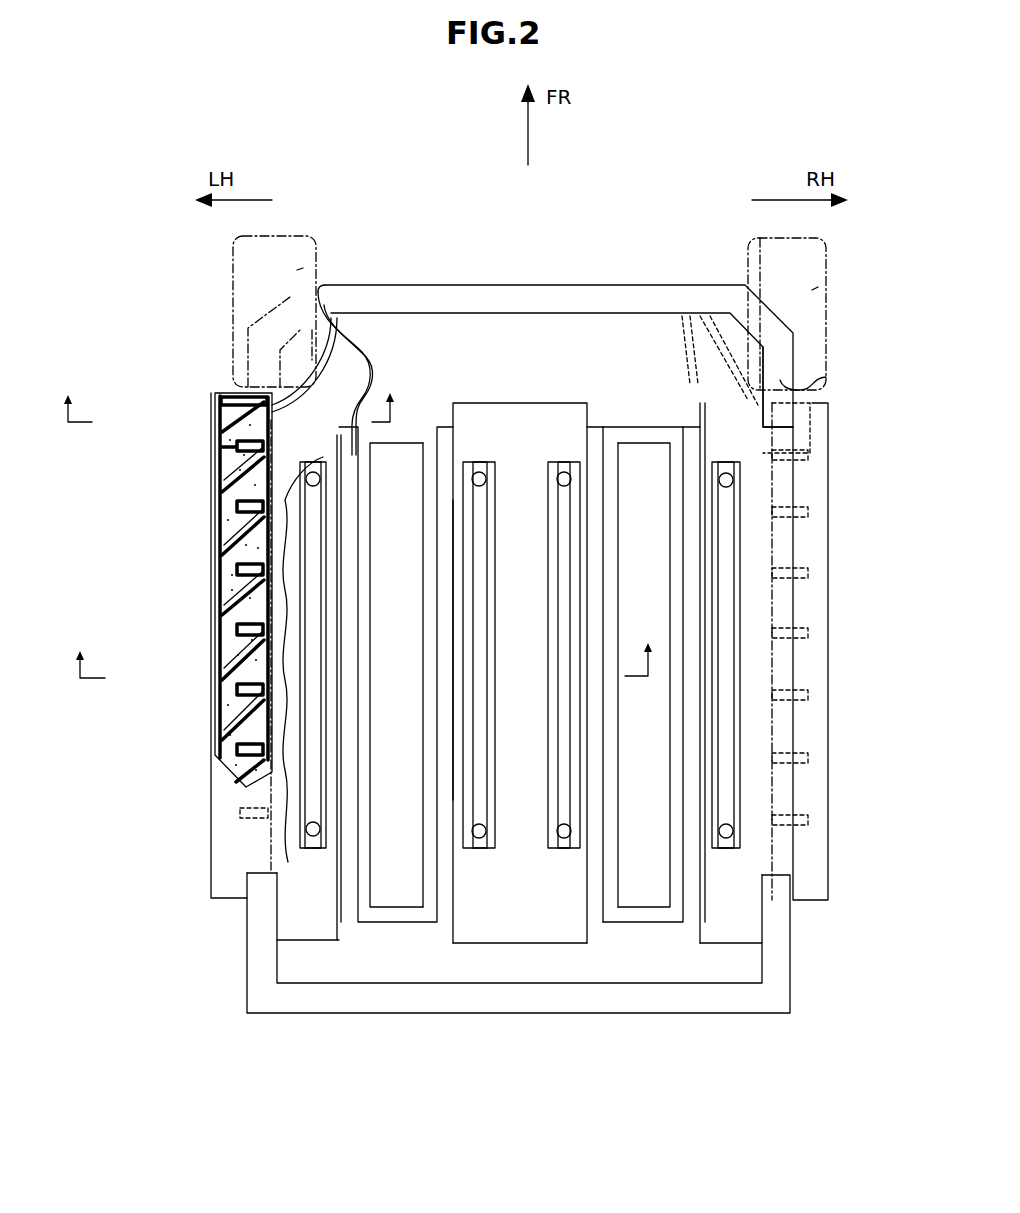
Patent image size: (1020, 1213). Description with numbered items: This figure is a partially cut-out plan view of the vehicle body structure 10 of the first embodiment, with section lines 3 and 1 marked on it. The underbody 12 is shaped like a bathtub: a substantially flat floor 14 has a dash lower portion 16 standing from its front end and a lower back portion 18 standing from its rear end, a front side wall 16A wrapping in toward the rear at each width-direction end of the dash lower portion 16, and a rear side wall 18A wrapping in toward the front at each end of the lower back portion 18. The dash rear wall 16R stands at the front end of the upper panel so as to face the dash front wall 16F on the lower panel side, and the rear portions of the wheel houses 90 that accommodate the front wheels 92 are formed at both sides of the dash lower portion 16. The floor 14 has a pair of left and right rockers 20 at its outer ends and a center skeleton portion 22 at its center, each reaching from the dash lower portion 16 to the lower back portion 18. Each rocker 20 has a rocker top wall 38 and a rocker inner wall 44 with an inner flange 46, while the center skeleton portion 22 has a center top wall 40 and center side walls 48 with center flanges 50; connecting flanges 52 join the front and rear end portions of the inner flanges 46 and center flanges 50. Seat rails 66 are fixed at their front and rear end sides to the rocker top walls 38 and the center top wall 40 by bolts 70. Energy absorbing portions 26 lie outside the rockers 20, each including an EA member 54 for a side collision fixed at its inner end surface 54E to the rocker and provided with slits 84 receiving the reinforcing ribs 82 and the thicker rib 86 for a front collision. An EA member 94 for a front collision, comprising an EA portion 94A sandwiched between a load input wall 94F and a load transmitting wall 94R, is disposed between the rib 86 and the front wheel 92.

The vehicle body structure 10 is at (614, 261).
The underbody 12 is at (480, 638).
The floor 14 is at (752, 530).
The dash lower portion 16 is at (503, 342).
The dash front wall 16F is at (322, 318).
The dash rear wall 16R is at (378, 372).
The front side wall 16A is at (826, 377).
The lower back portion 18 is at (548, 998).
The rear side wall 18A is at (252, 946).
The rocker 20 is at (256, 845).
The center skeleton portion 22 is at (488, 917).
The energy absorbing portion 26 is at (198, 878).
The rocker top wall 38 is at (318, 928).
The center top wall 40 is at (558, 930).
The rocker inner wall 44 is at (352, 730).
The inner flange 46 is at (368, 572).
The center side wall 48 is at (461, 655).
The center flange 50 is at (426, 596).
The connecting flange 52 is at (412, 428).
The EA member for a side collision 54 is at (217, 565).
The inner end surface 54E is at (298, 652).
The seat rail 66 is at (560, 470).
The bolt 70 is at (320, 479).
The reinforcing rib 82 is at (238, 522).
The slit 84 is at (238, 503).
The rib for a front collision 86 is at (222, 470).
The wheel house 90 is at (278, 272).
The front wheel 92 is at (303, 268).
The EA member for a front collision 94 is at (147, 382).
The load input wall 94F is at (222, 400).
The EA portion 94A is at (232, 418).
The load transmitting wall 94R is at (226, 446).
The section line 3- 3 is at (230, 397).
The section line 1- 1 is at (370, 654).